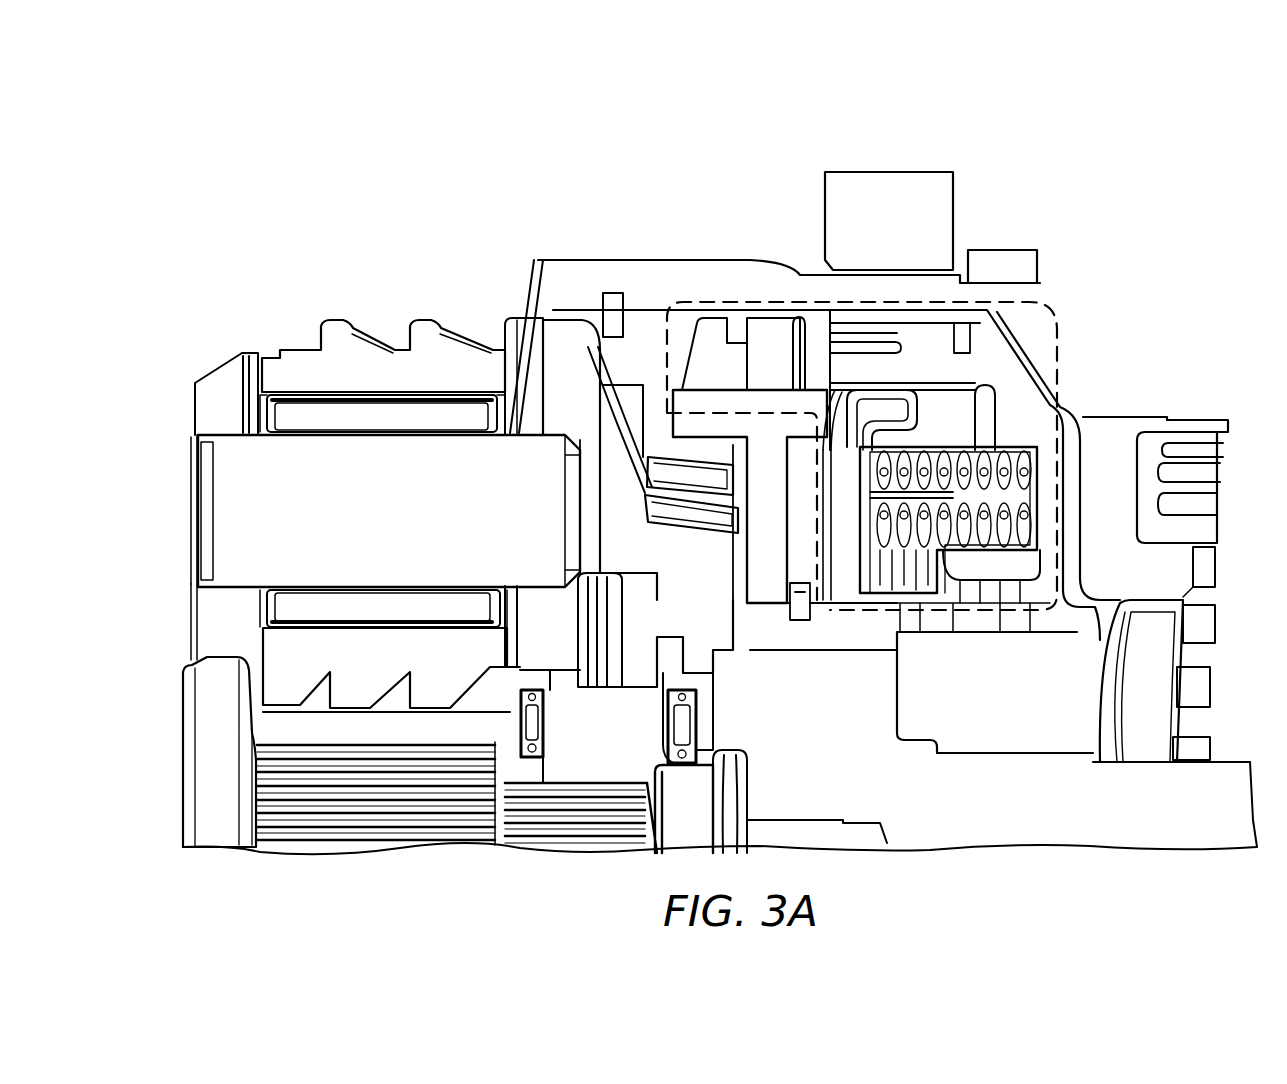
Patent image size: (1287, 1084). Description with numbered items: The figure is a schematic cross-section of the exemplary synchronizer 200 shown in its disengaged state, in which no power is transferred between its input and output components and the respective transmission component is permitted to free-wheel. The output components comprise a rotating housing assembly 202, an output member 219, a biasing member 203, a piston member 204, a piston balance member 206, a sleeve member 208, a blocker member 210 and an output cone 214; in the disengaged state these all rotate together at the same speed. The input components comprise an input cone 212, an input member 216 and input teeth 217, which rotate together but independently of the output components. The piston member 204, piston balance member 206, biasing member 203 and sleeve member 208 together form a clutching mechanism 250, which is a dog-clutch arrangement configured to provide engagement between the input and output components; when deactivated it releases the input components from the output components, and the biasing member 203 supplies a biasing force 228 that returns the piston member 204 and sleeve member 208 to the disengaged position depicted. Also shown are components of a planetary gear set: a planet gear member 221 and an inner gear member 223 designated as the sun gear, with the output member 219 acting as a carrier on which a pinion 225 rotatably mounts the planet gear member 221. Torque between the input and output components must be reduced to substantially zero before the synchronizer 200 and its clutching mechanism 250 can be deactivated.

The synchronizer 200 is at (1093, 195).
The rotating housing assembly 202 is at (983, 793).
The biasing member 203 is at (923, 437).
The piston member 204 is at (923, 350).
The piston balance member 206 is at (867, 383).
The sleeve member 208 is at (755, 373).
The blocker member 210 is at (657, 408).
The input cone 212 is at (650, 500).
The output cone 214 is at (650, 470).
The input member 216 is at (597, 720).
The input teeth 217 is at (618, 528).
The output member 219 is at (530, 368).
The planet gear member 221 is at (316, 360).
The inner gear member 223 is at (270, 722).
The pinion 225 is at (235, 495).
The biasing force 228 is at (965, 698).
The clutching mechanism 250 is at (1060, 357).